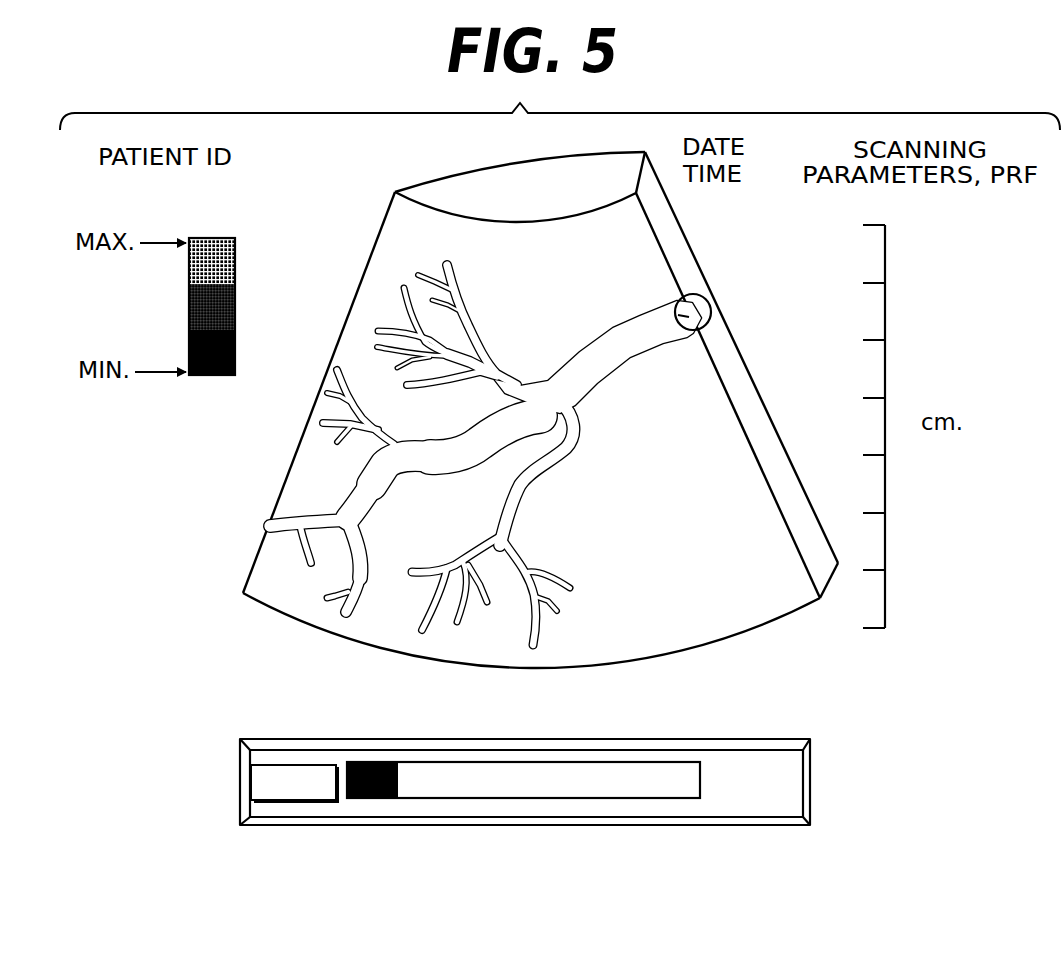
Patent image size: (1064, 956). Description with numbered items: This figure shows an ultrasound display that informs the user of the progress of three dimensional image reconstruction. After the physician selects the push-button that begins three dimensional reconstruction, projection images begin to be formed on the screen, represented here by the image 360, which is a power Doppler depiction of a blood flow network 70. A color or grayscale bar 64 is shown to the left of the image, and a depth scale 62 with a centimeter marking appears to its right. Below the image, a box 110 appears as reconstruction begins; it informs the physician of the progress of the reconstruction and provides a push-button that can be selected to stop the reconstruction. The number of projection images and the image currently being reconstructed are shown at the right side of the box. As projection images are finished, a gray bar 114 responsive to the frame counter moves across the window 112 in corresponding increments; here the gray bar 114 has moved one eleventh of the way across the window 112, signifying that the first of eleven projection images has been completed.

The image 360 is at (393, 199).
The blood flow network 70 is at (708, 292).
The color or grayscale bar 64 is at (220, 290).
The depth scale 62 is at (870, 375).
The box 110 is at (567, 789).
The window 112 is at (600, 783).
The gray bar 114 is at (362, 800).